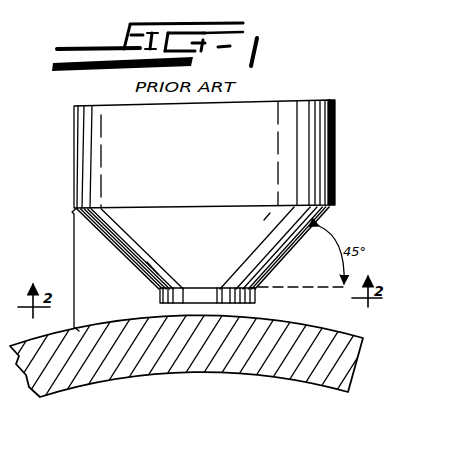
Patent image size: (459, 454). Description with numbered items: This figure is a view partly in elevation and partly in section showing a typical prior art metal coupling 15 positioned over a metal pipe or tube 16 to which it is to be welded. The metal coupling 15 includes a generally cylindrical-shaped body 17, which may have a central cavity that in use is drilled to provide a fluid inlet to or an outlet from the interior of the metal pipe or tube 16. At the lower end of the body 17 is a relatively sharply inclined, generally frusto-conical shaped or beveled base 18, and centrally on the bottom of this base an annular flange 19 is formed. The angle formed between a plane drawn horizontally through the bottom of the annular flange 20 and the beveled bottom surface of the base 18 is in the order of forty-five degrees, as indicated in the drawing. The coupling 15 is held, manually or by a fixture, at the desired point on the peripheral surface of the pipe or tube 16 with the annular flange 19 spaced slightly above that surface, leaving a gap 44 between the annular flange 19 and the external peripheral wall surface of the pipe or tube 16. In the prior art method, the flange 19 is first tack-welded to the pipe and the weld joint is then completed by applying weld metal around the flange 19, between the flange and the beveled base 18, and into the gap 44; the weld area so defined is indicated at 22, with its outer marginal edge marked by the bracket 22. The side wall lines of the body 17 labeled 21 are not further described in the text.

The metal coupling 15 is at (338, 151).
The metal pipe or tube 16 is at (346, 358).
The generally cylindrical-shaped body 17 is at (333, 190).
The frusto-conical shaped beveled base 18 is at (212, 240).
The annular flange 19 is at (160, 297).
The bottom of the annular flange 20 is at (257, 296).
The nozzle cylindrical side wall 21 is at (312, 128).
The weld area 22 is at (73, 258).
The gap 44 is at (209, 314).